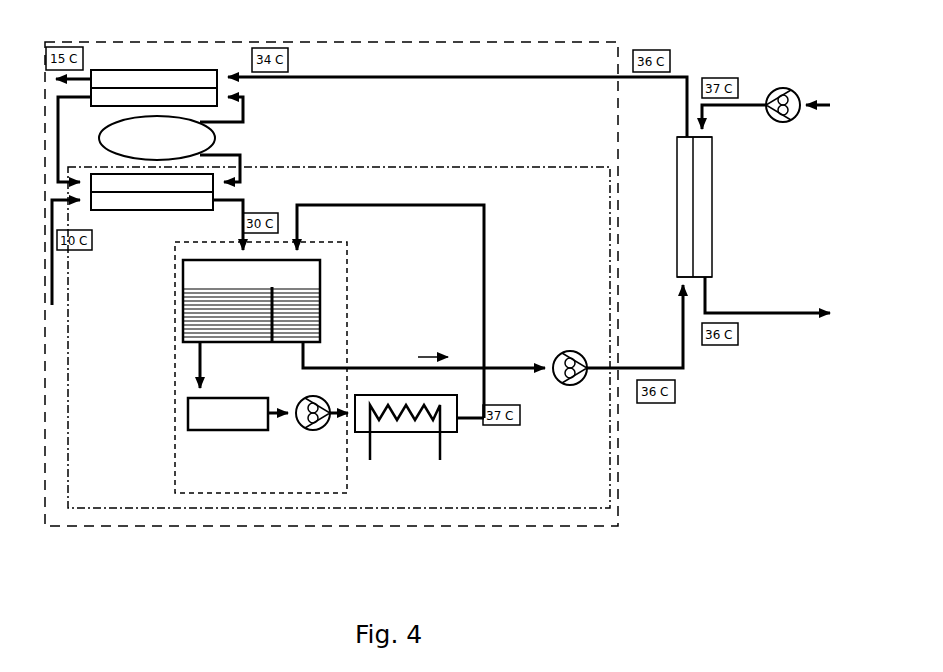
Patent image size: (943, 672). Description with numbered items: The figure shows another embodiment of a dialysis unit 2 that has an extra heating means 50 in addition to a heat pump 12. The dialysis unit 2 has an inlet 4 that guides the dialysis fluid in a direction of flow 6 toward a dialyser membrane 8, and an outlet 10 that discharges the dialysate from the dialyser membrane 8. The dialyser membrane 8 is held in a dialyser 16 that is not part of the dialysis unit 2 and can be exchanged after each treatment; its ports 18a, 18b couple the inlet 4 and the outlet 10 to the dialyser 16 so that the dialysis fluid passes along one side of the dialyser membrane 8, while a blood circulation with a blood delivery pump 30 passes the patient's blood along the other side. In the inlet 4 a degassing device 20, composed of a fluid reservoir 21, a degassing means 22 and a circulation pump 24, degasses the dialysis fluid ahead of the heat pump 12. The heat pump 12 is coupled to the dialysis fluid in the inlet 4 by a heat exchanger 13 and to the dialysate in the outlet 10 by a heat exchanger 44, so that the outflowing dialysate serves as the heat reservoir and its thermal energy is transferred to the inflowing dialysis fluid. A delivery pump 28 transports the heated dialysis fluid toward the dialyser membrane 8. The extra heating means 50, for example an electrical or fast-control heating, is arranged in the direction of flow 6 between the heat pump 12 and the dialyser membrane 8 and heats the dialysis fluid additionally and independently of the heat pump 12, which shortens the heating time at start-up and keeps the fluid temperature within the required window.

The dialysis unit 2 is at (577, 526).
The inlet 4 is at (478, 509).
The direction of flow 6 is at (422, 358).
The dialyser membrane 8 is at (693, 193).
The outlet 10 is at (485, 78).
The heat pump 12 is at (215, 138).
The heat exchanger 13 is at (153, 212).
The dialyser 16 is at (712, 222).
The port 18a is at (680, 275).
The port 18b is at (678, 137).
The degassing device 20 is at (174, 445).
The fluid reservoir 21 is at (320, 290).
The degassing means 22 is at (202, 430).
The circulation pump 24 is at (317, 430).
The delivery pump 28 is at (570, 385).
The blood delivery pump 30 is at (790, 86).
The heat exchanger 44 is at (165, 70).
The extra heating means 50 is at (448, 432).